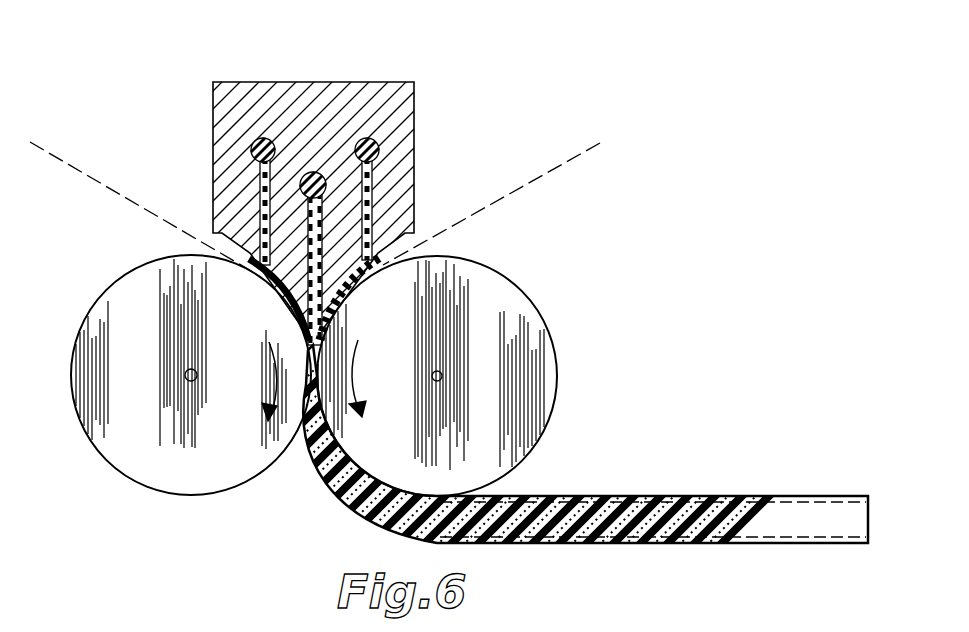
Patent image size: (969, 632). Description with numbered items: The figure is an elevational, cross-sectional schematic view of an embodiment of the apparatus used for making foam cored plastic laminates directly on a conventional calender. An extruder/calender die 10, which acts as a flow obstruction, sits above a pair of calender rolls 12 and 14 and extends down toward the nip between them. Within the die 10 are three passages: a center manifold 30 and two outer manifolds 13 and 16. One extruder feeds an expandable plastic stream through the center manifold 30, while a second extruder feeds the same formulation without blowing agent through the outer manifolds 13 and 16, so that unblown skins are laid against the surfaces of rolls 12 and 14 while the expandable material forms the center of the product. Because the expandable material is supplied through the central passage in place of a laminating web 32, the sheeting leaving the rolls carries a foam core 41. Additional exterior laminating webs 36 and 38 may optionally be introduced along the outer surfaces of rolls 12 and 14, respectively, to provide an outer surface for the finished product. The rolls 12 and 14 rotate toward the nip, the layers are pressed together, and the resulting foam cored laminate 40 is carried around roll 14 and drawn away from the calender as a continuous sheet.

The extruder/calender die 10 is at (343, 74).
The roll 12 is at (120, 377).
The outer manifold 13 is at (380, 152).
The roll 14 is at (505, 377).
The outer manifold 16 is at (251, 151).
The center manifold 30 is at (311, 268).
The laminating web 32 is at (324, 340).
The laminating web 36 is at (70, 168).
The laminating web 38 is at (563, 168).
The laminate 40 is at (687, 552).
The foam core 41 is at (601, 500).